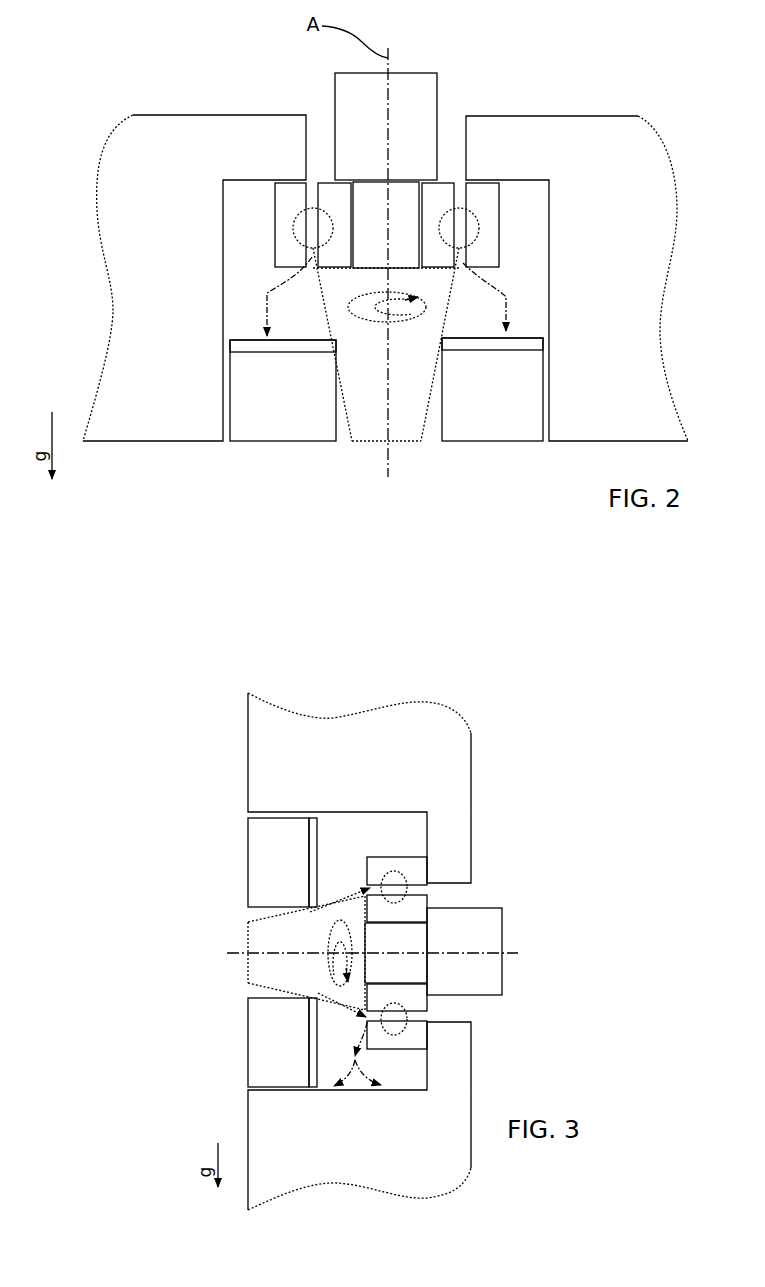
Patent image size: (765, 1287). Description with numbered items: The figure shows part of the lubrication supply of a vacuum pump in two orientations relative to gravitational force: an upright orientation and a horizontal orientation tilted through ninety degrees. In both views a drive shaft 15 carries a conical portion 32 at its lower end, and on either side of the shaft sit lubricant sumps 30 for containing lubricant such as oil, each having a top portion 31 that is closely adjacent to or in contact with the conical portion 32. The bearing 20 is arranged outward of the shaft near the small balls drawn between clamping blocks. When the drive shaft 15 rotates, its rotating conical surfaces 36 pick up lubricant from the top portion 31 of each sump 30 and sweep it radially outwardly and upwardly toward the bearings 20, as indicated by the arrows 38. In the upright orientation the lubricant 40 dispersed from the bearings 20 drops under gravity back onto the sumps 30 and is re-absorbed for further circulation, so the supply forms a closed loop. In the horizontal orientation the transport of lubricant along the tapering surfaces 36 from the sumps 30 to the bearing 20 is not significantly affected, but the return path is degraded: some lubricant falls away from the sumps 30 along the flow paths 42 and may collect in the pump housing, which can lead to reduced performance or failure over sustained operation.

In FIG. 2, the drive shaft 15 is at (425, 90).
In FIG. 3, the drive shaft 15 is at (493, 933).
In FIG. 2, the bearing 20 is at (283, 193).
In FIG. 3, the bearing 20 is at (412, 865).
In FIG. 2, the lubricant sump 30 is at (386, 411).
In FIG. 3, the lubricant sump 30 is at (263, 842).
In FIG. 2, the top portion 31 is at (240, 347).
In FIG. 2, the conical portion 32 is at (394, 397).
In FIG. 3, the conical portion 32 is at (256, 958).
In FIG. 2, the conical surfaces 36 is at (350, 420).
In FIG. 3, the conical surfaces 36 is at (263, 918).
In FIG. 2, the arrows 38 is at (312, 262).
In FIG. 3, the arrows 38 is at (338, 893).
In FIG. 2, the lubricant 40 is at (267, 293).
In FIG. 3, the flow paths 42 is at (353, 1090).